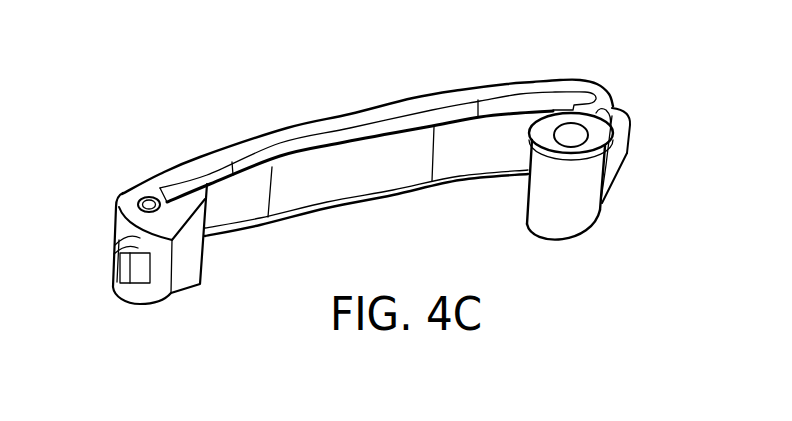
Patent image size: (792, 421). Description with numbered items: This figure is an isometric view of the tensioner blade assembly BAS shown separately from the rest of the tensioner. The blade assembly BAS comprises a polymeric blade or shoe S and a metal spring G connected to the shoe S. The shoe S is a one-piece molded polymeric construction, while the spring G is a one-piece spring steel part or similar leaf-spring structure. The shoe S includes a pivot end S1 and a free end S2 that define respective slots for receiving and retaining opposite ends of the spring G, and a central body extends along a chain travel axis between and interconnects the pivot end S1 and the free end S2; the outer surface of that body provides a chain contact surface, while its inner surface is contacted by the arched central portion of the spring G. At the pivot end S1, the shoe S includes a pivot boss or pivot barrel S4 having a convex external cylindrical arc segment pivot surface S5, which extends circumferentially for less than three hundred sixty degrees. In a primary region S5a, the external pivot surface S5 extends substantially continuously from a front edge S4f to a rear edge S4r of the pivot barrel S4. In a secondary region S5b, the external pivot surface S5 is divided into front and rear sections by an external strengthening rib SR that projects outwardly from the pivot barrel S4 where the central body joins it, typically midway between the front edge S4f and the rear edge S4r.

The tensioner blade assembly BAS is at (236, 91).
The shoe S is at (353, 110).
The pivot end S1 is at (572, 80).
The free end S2 is at (187, 265).
The pivot barrel S4 is at (548, 122).
The front edge S4f is at (632, 127).
The rear edge S4r is at (572, 244).
The external pivot surface S5 is at (527, 196).
The primary region S5a is at (540, 213).
The secondary region S5b is at (630, 150).
The external strengthening rib SR is at (630, 117).
The spring G is at (405, 173).